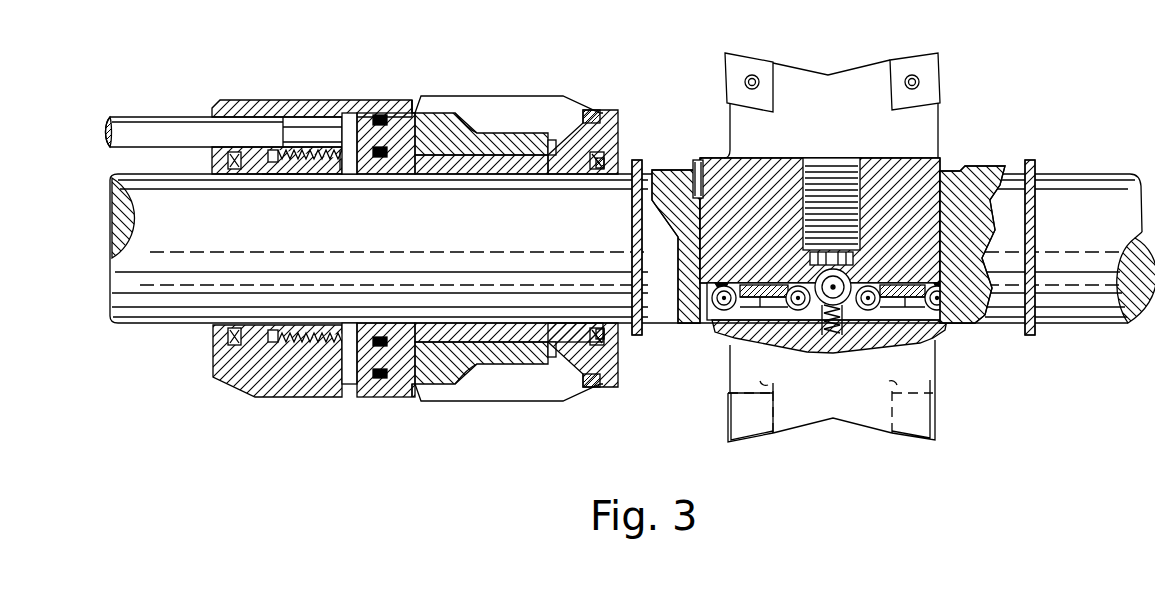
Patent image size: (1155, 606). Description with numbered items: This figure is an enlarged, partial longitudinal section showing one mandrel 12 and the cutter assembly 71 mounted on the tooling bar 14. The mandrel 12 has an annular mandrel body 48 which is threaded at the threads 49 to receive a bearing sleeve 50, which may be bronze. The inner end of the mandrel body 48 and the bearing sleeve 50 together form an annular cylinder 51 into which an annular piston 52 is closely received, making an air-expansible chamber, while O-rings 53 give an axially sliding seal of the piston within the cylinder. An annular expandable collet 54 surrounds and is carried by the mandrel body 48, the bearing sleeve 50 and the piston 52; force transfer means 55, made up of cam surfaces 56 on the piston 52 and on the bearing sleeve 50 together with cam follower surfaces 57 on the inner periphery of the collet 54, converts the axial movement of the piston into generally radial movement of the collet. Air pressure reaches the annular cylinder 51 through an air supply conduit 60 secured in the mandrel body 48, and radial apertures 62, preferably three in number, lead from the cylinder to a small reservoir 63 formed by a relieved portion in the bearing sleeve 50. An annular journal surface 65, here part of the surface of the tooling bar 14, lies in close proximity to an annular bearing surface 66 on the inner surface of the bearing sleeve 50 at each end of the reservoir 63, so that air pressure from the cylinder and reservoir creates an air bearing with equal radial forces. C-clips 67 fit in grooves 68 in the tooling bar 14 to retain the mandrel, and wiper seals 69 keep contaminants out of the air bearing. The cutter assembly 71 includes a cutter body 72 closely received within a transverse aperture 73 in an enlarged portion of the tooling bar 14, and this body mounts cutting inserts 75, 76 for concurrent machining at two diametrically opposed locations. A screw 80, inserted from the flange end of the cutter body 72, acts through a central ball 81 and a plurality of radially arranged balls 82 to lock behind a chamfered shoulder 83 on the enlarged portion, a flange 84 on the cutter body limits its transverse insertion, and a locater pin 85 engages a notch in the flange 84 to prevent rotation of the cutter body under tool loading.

The mandrel 12 is at (257, 100).
The tooling bar 14 is at (662, 315).
The mandrel body 48 is at (367, 102).
The threads 49 is at (318, 162).
The bearing sleeve 50 is at (548, 160).
The annular cylinder 51 is at (349, 115).
The annular piston 52 is at (442, 132).
The O-rings 53 is at (390, 160).
The expandable collet 54 is at (530, 97).
The force transfer means 55 is at (433, 112).
The cam surfaces 56 is at (440, 127).
The cam follower surfaces 57 is at (458, 150).
The air supply conduit 60 is at (182, 117).
The radial apertures 62 is at (350, 175).
The reservoir 63 is at (428, 175).
The annular journal surface 65 is at (275, 206).
The annular bearing surface 66 is at (280, 178).
The C-clips 67 is at (641, 163).
The grooves 68 is at (633, 227).
The wiper seals 69 is at (600, 157).
The cutter assembly 71 is at (955, 135).
The cutter body 72 is at (917, 172).
The transverse aperture 73 is at (942, 170).
The cutting insert 75 is at (775, 58).
The cutting insert 76 is at (732, 445).
The screw 80 is at (803, 178).
The central ball 81 is at (836, 300).
The radially arranged balls 82 is at (712, 308).
The chamfered shoulder 83 is at (950, 312).
The flange 84 is at (982, 165).
The locater pin 85 is at (697, 160).